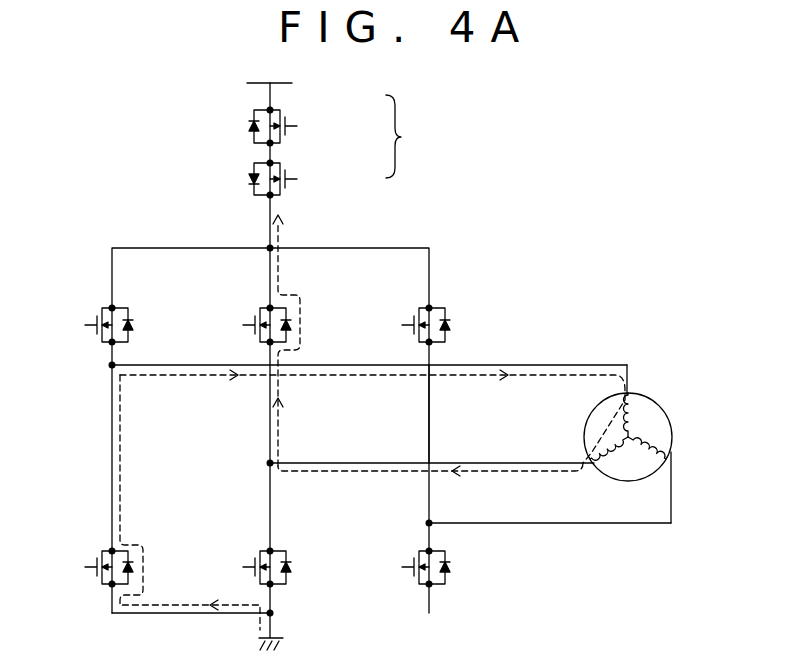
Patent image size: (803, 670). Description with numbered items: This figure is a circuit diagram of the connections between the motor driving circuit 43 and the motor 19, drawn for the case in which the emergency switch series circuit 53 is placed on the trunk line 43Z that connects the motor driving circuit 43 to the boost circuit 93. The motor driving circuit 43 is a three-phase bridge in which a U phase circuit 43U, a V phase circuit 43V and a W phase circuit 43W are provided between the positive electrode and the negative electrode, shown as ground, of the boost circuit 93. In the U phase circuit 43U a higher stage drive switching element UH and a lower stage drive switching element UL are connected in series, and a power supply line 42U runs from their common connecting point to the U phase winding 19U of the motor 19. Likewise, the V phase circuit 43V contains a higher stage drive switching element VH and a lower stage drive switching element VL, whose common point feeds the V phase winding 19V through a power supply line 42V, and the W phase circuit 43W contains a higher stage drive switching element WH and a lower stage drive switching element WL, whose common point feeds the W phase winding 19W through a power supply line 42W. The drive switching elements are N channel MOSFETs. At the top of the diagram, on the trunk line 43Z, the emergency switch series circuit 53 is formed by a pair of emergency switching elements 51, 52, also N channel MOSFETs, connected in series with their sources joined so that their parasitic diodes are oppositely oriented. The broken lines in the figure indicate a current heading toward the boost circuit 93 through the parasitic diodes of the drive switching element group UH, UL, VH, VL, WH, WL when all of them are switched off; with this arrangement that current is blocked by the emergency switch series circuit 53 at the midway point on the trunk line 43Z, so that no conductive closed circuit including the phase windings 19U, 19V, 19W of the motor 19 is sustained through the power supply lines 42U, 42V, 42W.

The boost circuit 93 is at (294, 72).
The trunk line 43Z is at (268, 100).
The emergency switching element 52 is at (291, 111).
The emergency switching element 51 is at (291, 163).
The emergency switch series circuit 53 is at (411, 136).
The motor driving circuit 43 is at (441, 238).
The higher stage drive switching element UH is at (90, 292).
The higher stage drive switching element VH is at (249, 303).
The higher stage drive switching element WH is at (417, 303).
The lower stage drive switching element UL is at (90, 544).
The lower stage drive switching element VL is at (249, 544).
The lower stage drive switching element WL is at (409, 543).
The power supply line 42U is at (592, 365).
The power supply line 42V is at (520, 462).
The power supply line 42W is at (525, 524).
The U phase circuit 43U is at (112, 466).
The V phase circuit 43V is at (270, 418).
The W phase circuit 43W is at (429, 412).
The motor 19 is at (668, 397).
The U phase winding 19U is at (637, 409).
The V phase winding 19V is at (616, 466).
The W phase winding 19W is at (650, 468).